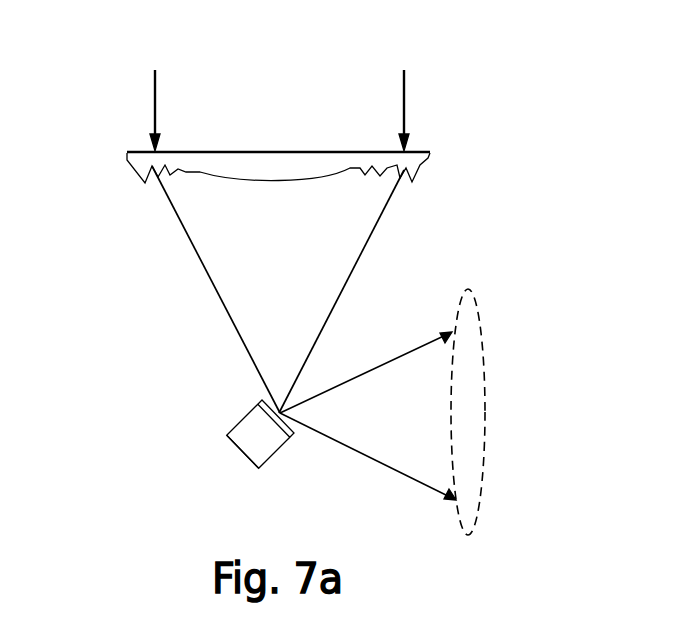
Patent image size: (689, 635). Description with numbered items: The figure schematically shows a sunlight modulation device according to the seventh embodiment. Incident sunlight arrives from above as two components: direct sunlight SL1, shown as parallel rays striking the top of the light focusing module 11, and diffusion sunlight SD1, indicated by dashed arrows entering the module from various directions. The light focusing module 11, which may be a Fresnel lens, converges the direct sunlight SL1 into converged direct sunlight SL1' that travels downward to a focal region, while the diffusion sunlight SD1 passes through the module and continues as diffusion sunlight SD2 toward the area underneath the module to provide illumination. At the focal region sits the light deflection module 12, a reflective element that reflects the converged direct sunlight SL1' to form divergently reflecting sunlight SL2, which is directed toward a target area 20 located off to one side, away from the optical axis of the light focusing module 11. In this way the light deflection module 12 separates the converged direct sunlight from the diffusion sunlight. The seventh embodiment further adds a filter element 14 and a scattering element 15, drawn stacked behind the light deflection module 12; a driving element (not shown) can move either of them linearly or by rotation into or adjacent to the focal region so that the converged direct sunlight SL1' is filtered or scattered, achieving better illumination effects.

The light focusing module 11 is at (430, 153).
The light deflection module 12 is at (260, 399).
The filter element 14 is at (235, 429).
The scattering element 15 is at (251, 459).
The target area 20 is at (486, 372).
The direct sunlight SL1 is at (235, 110).
The converged direct sunlight SL1' is at (294, 289).
The divergently reflecting sunlight SL2 is at (366, 457).
The diffusion sunlight SD1 is at (315, 118).
The diffusion sunlight SD2 is at (150, 347).